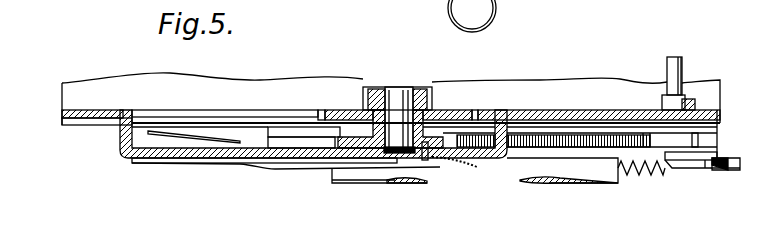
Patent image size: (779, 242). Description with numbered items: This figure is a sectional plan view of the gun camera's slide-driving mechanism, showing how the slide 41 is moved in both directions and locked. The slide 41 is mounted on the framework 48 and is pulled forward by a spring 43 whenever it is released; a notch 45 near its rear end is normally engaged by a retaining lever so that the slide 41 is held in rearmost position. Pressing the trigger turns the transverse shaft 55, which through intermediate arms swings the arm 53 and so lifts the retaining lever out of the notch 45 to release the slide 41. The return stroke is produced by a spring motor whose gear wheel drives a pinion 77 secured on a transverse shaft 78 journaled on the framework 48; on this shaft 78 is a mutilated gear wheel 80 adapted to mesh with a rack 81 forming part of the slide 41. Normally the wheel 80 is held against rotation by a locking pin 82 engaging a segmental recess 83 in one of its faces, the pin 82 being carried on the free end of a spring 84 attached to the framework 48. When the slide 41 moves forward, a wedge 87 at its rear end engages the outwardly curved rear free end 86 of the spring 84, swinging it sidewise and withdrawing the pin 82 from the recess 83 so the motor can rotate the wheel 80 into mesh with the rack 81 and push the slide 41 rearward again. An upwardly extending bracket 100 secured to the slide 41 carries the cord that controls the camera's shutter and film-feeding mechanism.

The framework 48 is at (207, 172).
The pinion 77 is at (372, 87).
The transverse shaft 78 is at (398, 102).
The mutilated gear wheel 80 is at (358, 138).
The segmental recess 83 is at (434, 134).
The rack 81 is at (565, 135).
The transverse shaft 55 is at (678, 72).
The arm 53 is at (693, 103).
The notch 45 is at (705, 138).
The wedge 87 is at (733, 160).
The slide 41 is at (511, 158).
The spring 43 is at (645, 173).
The spring 84 is at (318, 169).
The bracket 100 is at (403, 185).
The locking pin 82 is at (428, 162).
The rear free end 86 is at (476, 168).